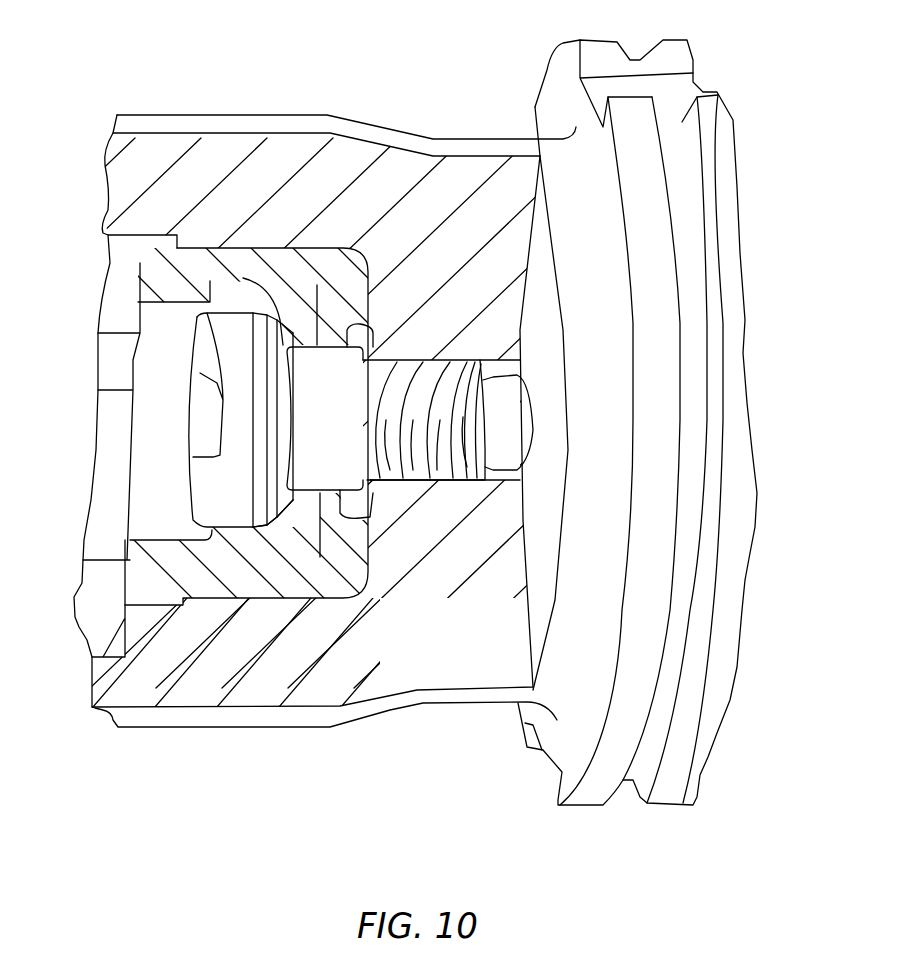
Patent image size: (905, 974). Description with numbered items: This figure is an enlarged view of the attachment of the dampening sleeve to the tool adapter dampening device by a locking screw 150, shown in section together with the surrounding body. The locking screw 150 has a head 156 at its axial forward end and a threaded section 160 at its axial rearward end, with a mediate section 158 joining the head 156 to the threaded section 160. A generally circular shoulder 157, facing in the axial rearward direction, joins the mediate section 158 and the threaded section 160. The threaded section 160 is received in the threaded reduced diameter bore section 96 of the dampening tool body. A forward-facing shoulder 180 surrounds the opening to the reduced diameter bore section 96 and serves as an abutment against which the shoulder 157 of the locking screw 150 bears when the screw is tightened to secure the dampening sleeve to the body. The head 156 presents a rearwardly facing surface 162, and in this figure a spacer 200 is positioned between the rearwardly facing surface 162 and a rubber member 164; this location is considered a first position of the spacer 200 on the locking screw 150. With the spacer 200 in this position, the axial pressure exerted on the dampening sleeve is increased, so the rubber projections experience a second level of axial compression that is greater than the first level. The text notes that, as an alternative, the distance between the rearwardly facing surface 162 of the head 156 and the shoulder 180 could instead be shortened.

The locking screw 150 is at (400, 540).
The reduced diameter bore section 96 is at (520, 537).
The rearwardly facing surface 162 is at (243, 278).
The head 156 is at (240, 398).
The mediate section 158 is at (330, 357).
The shoulder 157 is at (388, 383).
The threaded section 160 is at (450, 427).
The shoulder 180 is at (363, 493).
The rubber member 164 is at (277, 492).
The spacer 200 is at (290, 462).